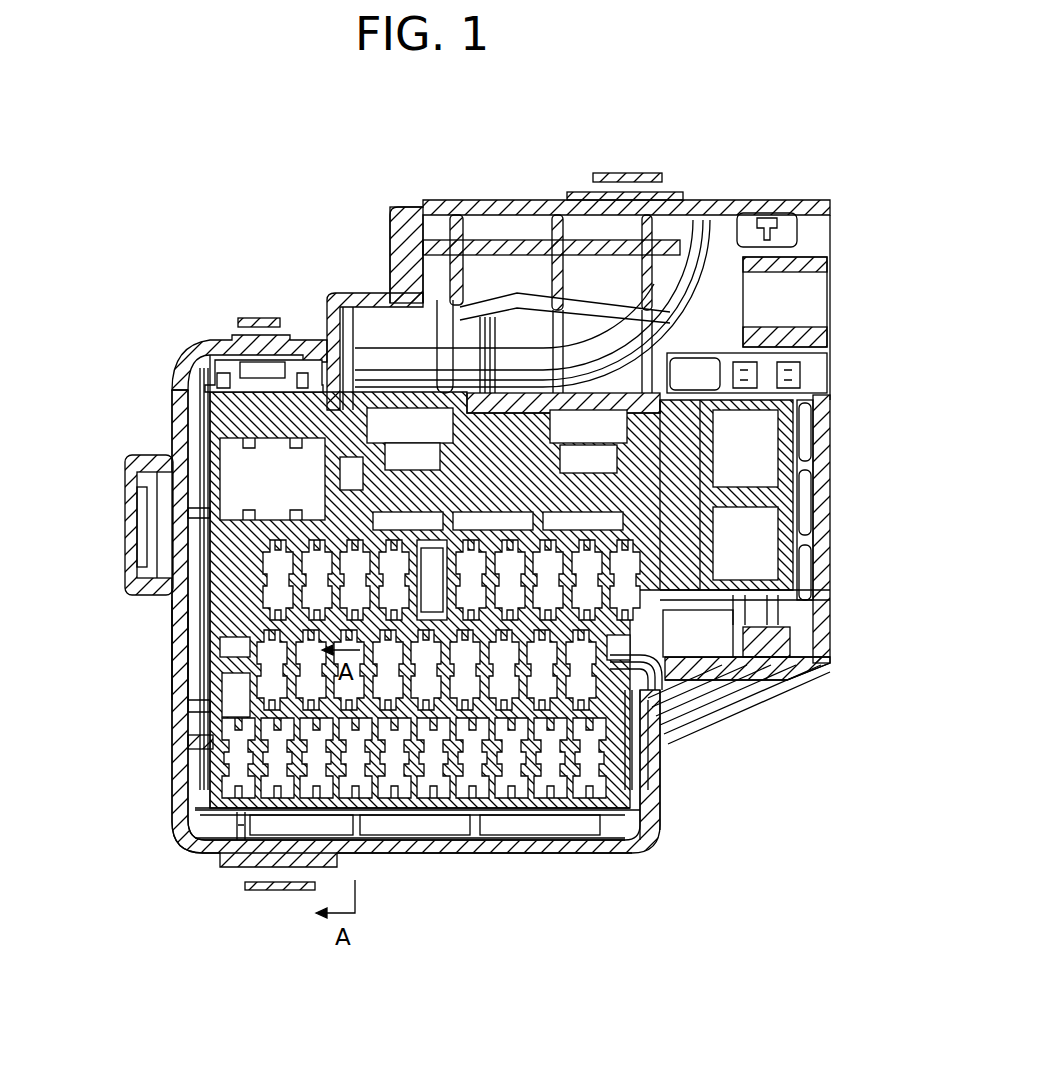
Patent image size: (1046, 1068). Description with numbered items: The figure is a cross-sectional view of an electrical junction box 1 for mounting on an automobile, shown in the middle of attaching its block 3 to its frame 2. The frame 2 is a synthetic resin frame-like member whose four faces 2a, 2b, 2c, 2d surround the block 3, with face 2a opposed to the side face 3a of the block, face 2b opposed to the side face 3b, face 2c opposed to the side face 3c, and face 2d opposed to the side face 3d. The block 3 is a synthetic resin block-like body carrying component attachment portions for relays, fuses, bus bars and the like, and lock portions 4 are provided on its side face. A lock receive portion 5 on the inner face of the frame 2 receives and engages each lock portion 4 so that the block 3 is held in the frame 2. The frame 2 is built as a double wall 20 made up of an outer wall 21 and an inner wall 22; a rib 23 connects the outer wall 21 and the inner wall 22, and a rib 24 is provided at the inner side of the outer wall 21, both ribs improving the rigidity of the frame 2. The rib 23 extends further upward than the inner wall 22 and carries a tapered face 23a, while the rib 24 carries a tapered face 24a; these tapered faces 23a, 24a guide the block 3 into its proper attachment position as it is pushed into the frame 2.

The electrical junction box 1 is at (750, 122).
The frame 2 is at (188, 350).
The face 2a is at (186, 626).
The face 2b is at (412, 828).
The face 2c is at (632, 750).
The face 2d is at (441, 380).
The block 3 is at (212, 412).
The side face 3a is at (204, 565).
The side face 3b is at (453, 823).
The side face 3c is at (660, 762).
The side face 3d is at (470, 385).
The lock portion 4 is at (188, 742).
The lock receive portion 5 is at (255, 385).
The double wall 20 is at (92, 406).
The outer wall 21 is at (186, 412).
The inner wall 22 is at (186, 438).
The rib 23 is at (166, 536).
The tapered face 23a is at (188, 510).
The rib 24 is at (172, 588).
The tapered face 24a is at (318, 418).